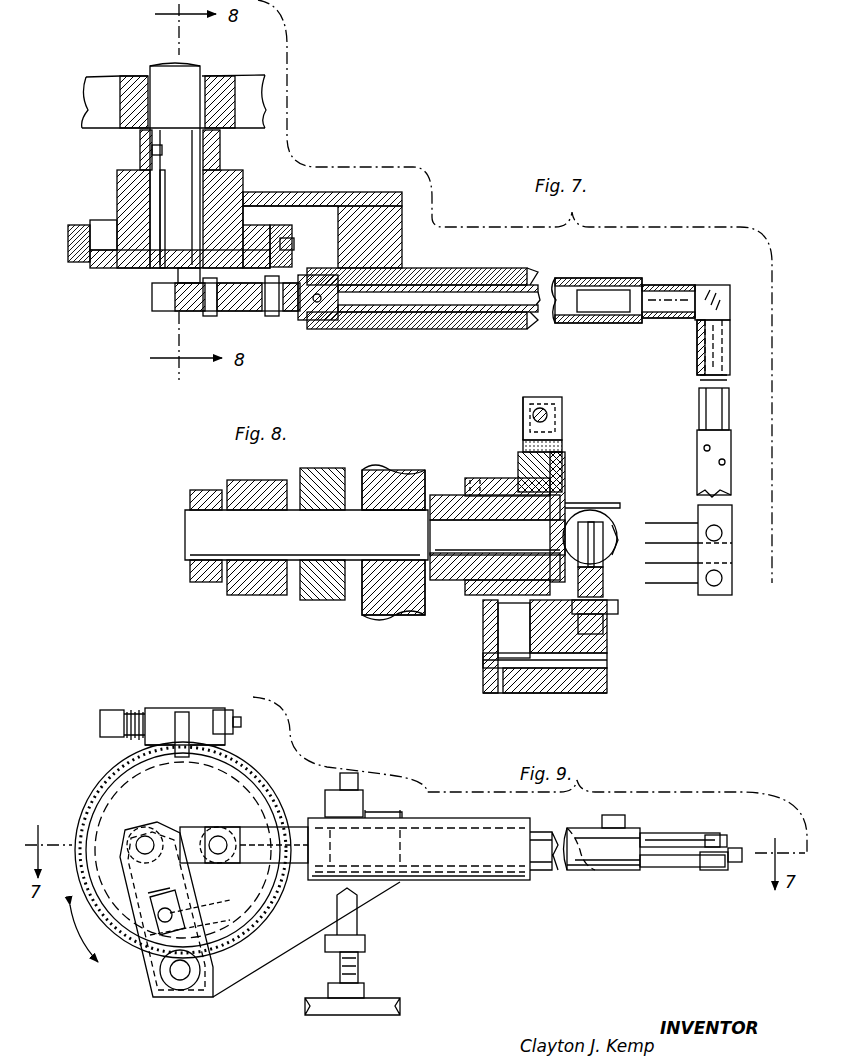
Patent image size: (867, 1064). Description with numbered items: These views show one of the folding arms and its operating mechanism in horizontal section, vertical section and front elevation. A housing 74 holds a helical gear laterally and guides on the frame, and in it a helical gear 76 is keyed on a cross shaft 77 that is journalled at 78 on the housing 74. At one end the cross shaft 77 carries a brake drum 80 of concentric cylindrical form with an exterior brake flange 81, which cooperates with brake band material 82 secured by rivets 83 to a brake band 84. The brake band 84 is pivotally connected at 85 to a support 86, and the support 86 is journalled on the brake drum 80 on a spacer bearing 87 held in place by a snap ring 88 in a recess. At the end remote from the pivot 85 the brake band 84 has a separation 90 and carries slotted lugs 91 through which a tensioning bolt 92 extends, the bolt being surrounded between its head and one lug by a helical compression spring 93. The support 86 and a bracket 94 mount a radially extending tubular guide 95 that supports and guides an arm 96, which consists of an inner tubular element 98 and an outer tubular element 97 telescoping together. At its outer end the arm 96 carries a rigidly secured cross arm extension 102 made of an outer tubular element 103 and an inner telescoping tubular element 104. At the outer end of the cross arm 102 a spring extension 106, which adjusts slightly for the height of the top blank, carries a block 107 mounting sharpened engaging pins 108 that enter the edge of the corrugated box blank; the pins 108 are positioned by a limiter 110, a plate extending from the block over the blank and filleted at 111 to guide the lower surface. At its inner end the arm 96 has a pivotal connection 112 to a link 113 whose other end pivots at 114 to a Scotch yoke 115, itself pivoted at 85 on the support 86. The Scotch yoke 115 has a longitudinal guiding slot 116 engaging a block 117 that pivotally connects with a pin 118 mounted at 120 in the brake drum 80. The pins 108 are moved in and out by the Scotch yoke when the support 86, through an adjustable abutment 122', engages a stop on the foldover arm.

In FIG. 7, the housing 74 is at (98, 99).
In FIG. 8, the helical gear 76 is at (335, 460).
In FIG. 8, the cross shaft 77 is at (375, 535).
In FIG. 8, the journal 78 is at (258, 595).
In FIG. 7, the brake drum 80 is at (114, 270).
In FIG. 8, the brake drum 80 is at (568, 478).
In FIG. 9, the brake drum 80 is at (146, 836).
In FIG. 8, the brake flange 81 is at (520, 478).
In FIG. 9, the brake flange 81 is at (240, 772).
In FIG. 7, the brake band material 82 is at (285, 228).
In FIG. 8, the brake band material 82 is at (562, 448).
In FIG. 9, the brake band material 82 is at (222, 772).
In FIG. 7, the rivets 83 is at (294, 245).
In FIG. 7, the brake band 84 is at (68, 243).
In FIG. 8, the brake band 84 is at (520, 430).
In FIG. 9, the brake band 84 is at (272, 785).
In FIG. 8, the pivot 85 is at (483, 662).
In FIG. 9, the pivot 85 is at (180, 985).
In FIG. 7, the support 86 is at (330, 188).
In FIG. 8, the support 86 is at (483, 630).
In FIG. 9, the support 86 is at (295, 965).
In FIG. 7, the spacer bearing 87 is at (222, 188).
In FIG. 8, the spacer bearing 87 is at (485, 480).
In FIG. 7, the snap ring 88 is at (218, 160).
In FIG. 8, the separation 90 is at (548, 404).
In FIG. 9, the separation 90 is at (185, 715).
In FIG. 8, the slotted lugs 91 is at (522, 400).
In FIG. 9, the slotted lugs 91 is at (160, 720).
In FIG. 8, the tensioning bolt 92 is at (548, 415).
In FIG. 9, the tensioning bolt 92 is at (233, 712).
In FIG. 9, the helical compression spring 93 is at (128, 710).
In FIG. 7, the bracket 94 is at (370, 220).
In FIG. 9, the bracket 94 is at (405, 818).
In FIG. 7, the tubular guide 95 is at (445, 270).
In FIG. 9, the tubular guide 95 is at (462, 880).
In FIG. 7, the arm 96 is at (545, 275).
In FIG. 9, the arm 96 is at (578, 872).
In FIG. 7, the outer tubular element 97 is at (630, 285).
In FIG. 9, the outer tubular element 97 is at (640, 833).
In FIG. 7, the inner tubular element 98 is at (690, 285).
In FIG. 9, the inner tubular element 98 is at (700, 835).
In FIG. 7, the cross arm extension 102 is at (697, 350).
In FIG. 7, the outer tubular element 103 is at (700, 380).
In FIG. 7, the inner telescoping tubular element 104 is at (699, 412).
In FIG. 9, the spring extension 106 is at (740, 848).
In FIG. 9, the block 107 is at (718, 870).
In FIG. 8, the engaging pins 108 is at (680, 518).
In FIG. 9, the engaging pins 108 is at (662, 868).
In FIG. 9, the limiter 110 is at (612, 815).
In FIG. 9, the fillet 111 is at (585, 835).
In FIG. 7, the pivotal connection 112 is at (272, 316).
In FIG. 8, the pivotal connection 112 is at (612, 555).
In FIG. 9, the pivotal connection 112 is at (222, 836).
In FIG. 7, the link 113 is at (178, 275).
In FIG. 8, the link 113 is at (606, 580).
In FIG. 9, the link 113 is at (240, 863).
In FIG. 7, the pivotal connection 114 is at (210, 316).
In FIG. 9, the pivotal connection 114 is at (138, 836).
In FIG. 8, the Scotch yoke 115 is at (607, 650).
In FIG. 9, the Scotch yoke 115 is at (150, 945).
In FIG. 9, the guiding slot 116 is at (172, 895).
In FIG. 8, the block 117 is at (606, 630).
In FIG. 9, the block 117 is at (193, 921).
In FIG. 8, the pin 118 is at (618, 610).
In FIG. 9, the pin 118 is at (203, 901).
In FIG. 8, the mounting 120 is at (498, 610).
In FIG. 9, the adjustable abutment 122' is at (365, 774).